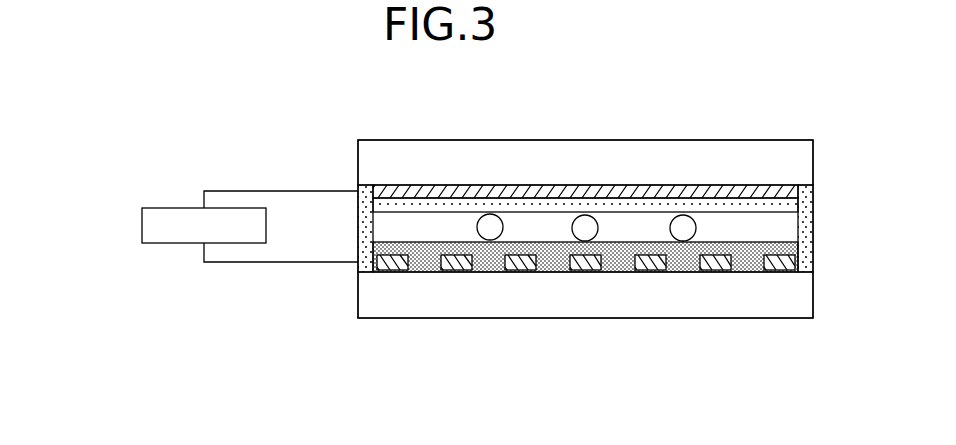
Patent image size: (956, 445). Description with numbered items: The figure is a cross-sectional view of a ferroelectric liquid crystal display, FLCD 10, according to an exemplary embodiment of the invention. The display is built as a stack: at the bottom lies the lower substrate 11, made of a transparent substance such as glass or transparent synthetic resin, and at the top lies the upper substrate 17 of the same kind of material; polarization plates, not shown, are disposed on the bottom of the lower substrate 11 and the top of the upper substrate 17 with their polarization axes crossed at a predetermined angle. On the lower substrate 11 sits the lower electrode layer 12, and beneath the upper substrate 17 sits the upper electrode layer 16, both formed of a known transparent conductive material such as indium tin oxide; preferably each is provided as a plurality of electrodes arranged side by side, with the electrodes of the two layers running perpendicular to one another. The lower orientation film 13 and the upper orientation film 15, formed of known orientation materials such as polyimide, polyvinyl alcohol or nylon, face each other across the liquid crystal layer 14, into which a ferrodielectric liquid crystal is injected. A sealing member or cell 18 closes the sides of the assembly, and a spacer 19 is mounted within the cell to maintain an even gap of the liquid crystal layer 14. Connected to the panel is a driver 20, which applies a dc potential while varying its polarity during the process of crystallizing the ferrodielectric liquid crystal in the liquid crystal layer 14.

The FLCD 10 is at (350, 119).
The lower substrate 11 is at (493, 292).
The lower electrode layer 12 is at (718, 262).
The lower orientation film 13 is at (613, 258).
The liquid crystal layer 14 is at (450, 239).
The upper orientation film 15 is at (749, 208).
The upper electrode layer 16 is at (670, 195).
The upper substrate 17 is at (582, 165).
The sealing member 18 is at (359, 245).
The spacer 19 is at (487, 228).
The driver 20 is at (175, 208).